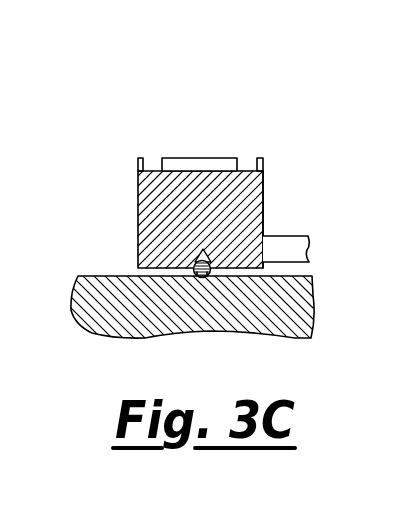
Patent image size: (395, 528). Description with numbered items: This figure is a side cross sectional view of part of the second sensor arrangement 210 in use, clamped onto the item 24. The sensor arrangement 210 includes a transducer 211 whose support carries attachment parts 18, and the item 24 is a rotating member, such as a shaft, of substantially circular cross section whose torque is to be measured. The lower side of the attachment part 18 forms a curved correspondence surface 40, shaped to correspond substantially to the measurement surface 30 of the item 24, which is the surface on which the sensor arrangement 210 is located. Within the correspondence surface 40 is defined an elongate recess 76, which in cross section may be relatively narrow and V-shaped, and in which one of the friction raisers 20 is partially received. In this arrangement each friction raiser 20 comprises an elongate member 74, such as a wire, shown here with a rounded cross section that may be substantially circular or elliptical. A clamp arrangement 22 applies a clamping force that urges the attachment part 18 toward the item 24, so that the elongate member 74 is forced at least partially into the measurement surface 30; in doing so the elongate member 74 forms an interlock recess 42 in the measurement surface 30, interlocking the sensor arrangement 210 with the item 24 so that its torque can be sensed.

The second sensor arrangement 210 is at (198, 188).
The attachment part 18 is at (177, 198).
The clamp arrangement 22 is at (205, 158).
The transducer 211 is at (265, 187).
The measurement surface 30 is at (255, 277).
The elongate recess 76 is at (207, 252).
The friction raiser 20 is at (123, 248).
The elongate member 74 is at (195, 266).
The item 24 is at (103, 308).
The correspondence surface 40 is at (197, 271).
The interlock recess 42 is at (207, 271).